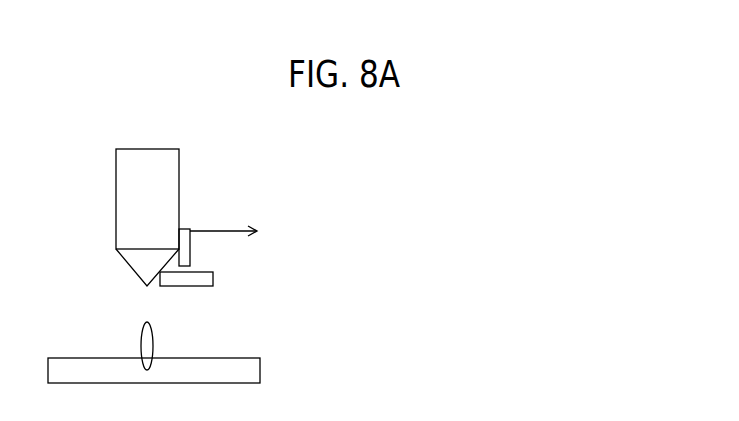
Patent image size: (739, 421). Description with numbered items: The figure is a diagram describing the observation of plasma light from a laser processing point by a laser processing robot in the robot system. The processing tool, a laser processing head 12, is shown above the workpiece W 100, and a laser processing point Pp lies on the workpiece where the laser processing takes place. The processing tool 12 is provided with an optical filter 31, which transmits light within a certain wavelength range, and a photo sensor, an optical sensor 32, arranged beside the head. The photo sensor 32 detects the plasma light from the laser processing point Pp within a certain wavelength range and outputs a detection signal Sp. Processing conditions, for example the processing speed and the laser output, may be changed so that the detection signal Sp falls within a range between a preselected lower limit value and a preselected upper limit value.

The processing tool (laser processing head) 12 is at (106, 176).
The photo sensor (optical sensor) 32 is at (187, 228).
The optical filter 31 is at (213, 279).
The detection signal Sp is at (242, 233).
The laser processing point Pp is at (137, 338).
The workpiece W 100 is at (260, 368).